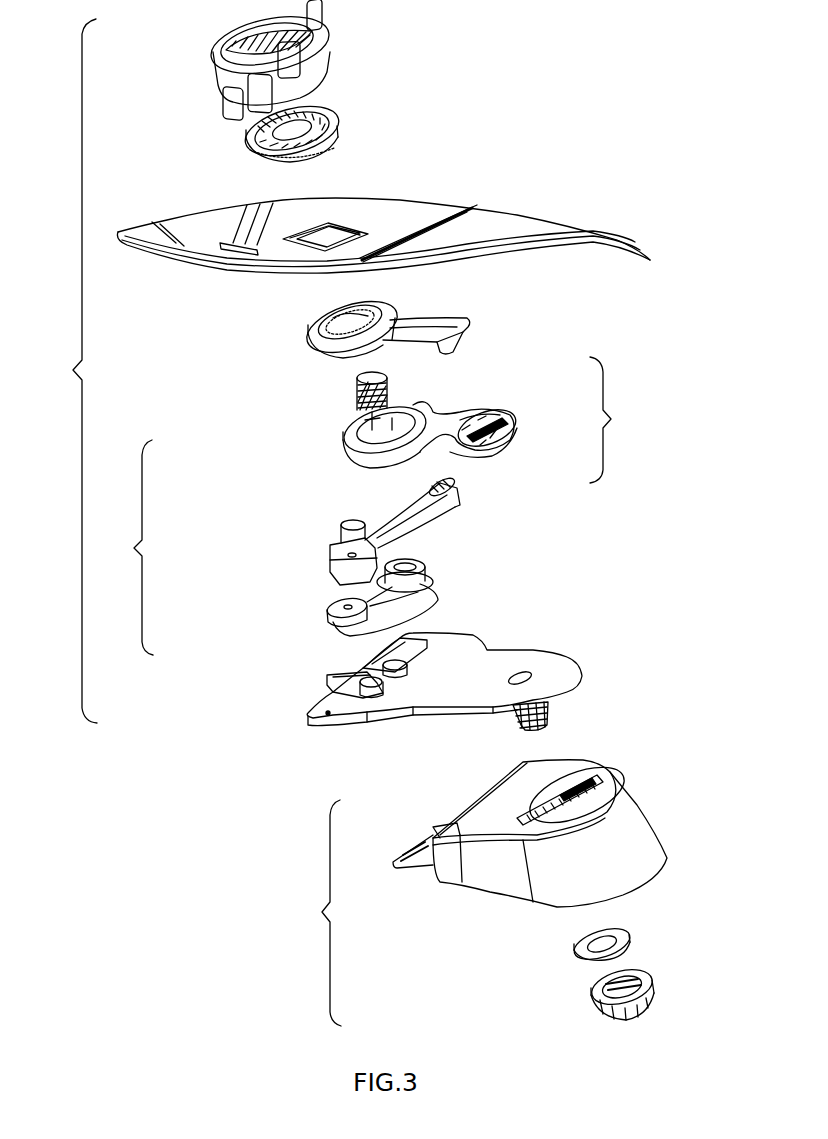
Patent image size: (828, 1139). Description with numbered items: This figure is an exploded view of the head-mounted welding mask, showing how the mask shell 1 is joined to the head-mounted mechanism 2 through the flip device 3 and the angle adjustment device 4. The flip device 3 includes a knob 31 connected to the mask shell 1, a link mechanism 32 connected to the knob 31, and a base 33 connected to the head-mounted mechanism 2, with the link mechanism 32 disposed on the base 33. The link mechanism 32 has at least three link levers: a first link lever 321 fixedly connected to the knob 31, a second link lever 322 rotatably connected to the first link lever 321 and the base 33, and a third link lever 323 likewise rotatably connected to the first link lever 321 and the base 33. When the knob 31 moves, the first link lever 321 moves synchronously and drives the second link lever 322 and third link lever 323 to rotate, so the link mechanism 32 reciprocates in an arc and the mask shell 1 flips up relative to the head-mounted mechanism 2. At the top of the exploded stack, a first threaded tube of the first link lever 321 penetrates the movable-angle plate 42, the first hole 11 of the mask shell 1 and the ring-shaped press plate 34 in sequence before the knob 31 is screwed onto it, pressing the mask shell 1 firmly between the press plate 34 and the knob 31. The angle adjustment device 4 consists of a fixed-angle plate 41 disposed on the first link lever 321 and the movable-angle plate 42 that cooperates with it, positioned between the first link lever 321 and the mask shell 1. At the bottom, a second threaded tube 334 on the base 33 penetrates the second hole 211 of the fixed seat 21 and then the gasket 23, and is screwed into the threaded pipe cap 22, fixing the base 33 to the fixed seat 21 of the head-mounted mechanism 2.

The mask shell 1 is at (383, 209).
The first hole 11 is at (338, 230).
The head-mounted mechanism 2 is at (319, 913).
The fixed seat 21 is at (518, 817).
The second hole 211 is at (583, 770).
The threaded pipe cap 22 is at (593, 1008).
The gasket 23 is at (574, 946).
The flip device 3 is at (70, 371).
The knob 31 is at (238, 47).
The link mechanism 32 is at (127, 547).
The first link lever 321 is at (362, 417).
The second link lever 322 is at (330, 547).
The third link lever 323 is at (330, 623).
The base 33 is at (306, 713).
The second threaded tube 334 is at (545, 715).
The press plate 34 is at (246, 146).
The angle adjustment device 4 is at (610, 420).
The fixed-angle plate 41 is at (487, 447).
The movable-angle plate 42 is at (473, 333).